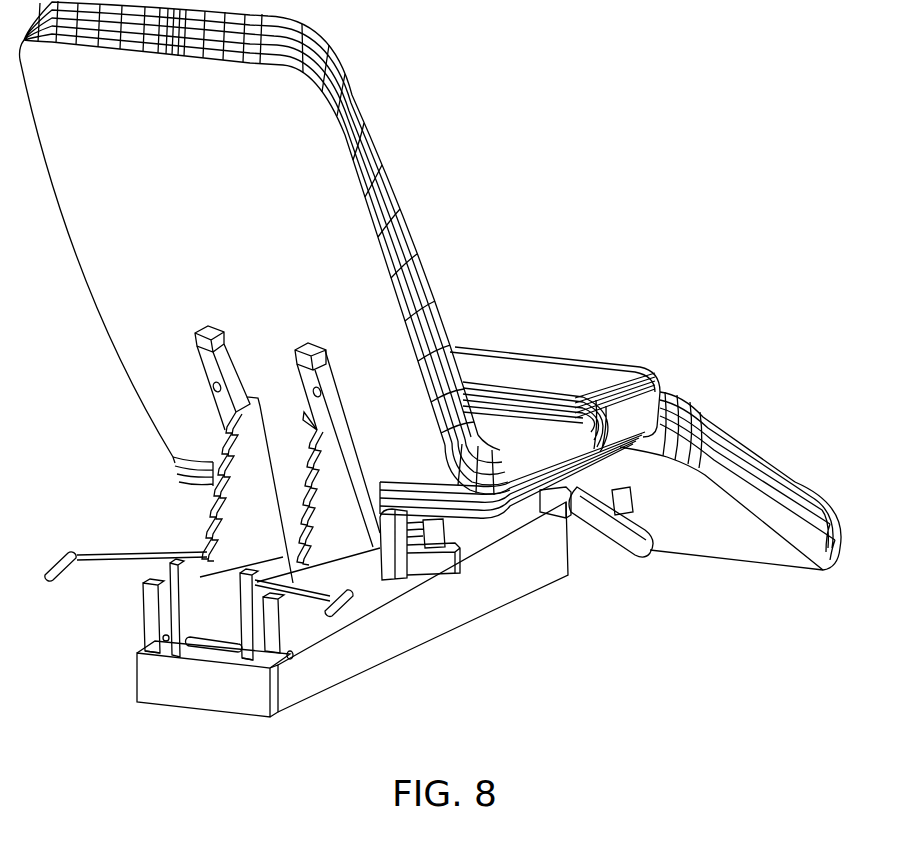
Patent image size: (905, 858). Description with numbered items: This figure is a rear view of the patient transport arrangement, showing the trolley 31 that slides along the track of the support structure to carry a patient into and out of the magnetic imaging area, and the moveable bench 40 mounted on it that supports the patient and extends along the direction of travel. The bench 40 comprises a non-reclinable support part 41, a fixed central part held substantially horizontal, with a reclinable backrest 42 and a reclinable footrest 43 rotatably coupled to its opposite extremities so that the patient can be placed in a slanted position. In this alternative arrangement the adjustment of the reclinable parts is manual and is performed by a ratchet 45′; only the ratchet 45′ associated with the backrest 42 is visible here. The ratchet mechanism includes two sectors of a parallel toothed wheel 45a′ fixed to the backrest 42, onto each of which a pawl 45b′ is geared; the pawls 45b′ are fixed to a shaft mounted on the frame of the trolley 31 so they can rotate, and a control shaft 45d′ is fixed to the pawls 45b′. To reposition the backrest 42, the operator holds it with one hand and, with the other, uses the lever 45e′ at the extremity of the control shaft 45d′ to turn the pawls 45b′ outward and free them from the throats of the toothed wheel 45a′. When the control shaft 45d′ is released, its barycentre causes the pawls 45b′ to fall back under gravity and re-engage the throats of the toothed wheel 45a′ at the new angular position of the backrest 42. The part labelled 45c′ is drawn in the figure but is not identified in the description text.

The bench 40 is at (548, 166).
The non-reclinable support part 41 is at (540, 358).
The backrest 42 is at (358, 111).
The footrest 43 is at (743, 438).
The trolley 31 is at (410, 652).
The ratchet 45′ is at (196, 511).
The toothed wheel 45a′ is at (208, 530).
The pawls 45b′ is at (222, 520).
The cross bar 45c′ is at (197, 653).
The control shaft 45d′ is at (131, 570).
The lever 45e′ is at (54, 580).